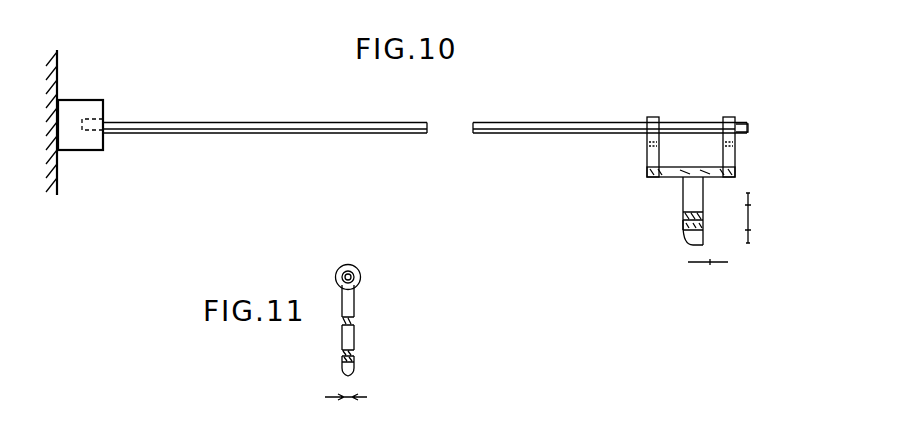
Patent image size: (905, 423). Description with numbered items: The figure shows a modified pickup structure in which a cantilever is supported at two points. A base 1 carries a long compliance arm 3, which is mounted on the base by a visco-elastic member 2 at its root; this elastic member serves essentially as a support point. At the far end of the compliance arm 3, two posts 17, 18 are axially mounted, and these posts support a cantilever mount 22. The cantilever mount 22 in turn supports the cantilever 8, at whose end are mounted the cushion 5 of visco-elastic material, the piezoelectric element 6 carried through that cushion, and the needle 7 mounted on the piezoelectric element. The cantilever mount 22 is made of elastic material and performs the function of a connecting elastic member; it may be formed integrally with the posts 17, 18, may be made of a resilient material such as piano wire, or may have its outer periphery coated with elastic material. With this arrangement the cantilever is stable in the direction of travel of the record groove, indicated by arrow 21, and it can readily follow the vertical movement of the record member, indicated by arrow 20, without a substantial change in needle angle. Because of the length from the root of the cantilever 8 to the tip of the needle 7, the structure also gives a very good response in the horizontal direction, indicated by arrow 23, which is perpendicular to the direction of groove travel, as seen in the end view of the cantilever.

In FIG. 10, the base 1 is at (56, 92).
In FIG. 10, the visco-elastic member 2 is at (100, 101).
In FIG. 10, the compliance arm 3 is at (262, 134).
In FIG. 11, the compliance arm 3 is at (361, 278).
In FIG. 10, the cushion 5 is at (703, 216).
In FIG. 11, the cushion 5 is at (342, 352).
In FIG. 10, the piezoelectric element 6 is at (683, 226).
In FIG. 11, the piezoelectric element 6 is at (354, 360).
In FIG. 10, the needle 7 is at (687, 240).
In FIG. 11, the needle 7 is at (344, 371).
In FIG. 10, the cantilever 8 is at (703, 196).
In FIG. 11, the cantilever 8 is at (353, 340).
In FIG. 10, the post 17 is at (655, 147).
In FIG. 11, the post 17 is at (353, 305).
In FIG. 10, the post 18 is at (733, 147).
In FIG. 10, the arrow indicating vertical movement 20 is at (750, 222).
In FIG. 10, the arrow indicating direction of travel 21 is at (708, 264).
In FIG. 10, the cantilever mount 22 is at (660, 172).
In FIG. 11, the cantilever mount 22 is at (354, 322).
In FIG. 11, the arrow indicating horizontal direction 23 is at (352, 399).